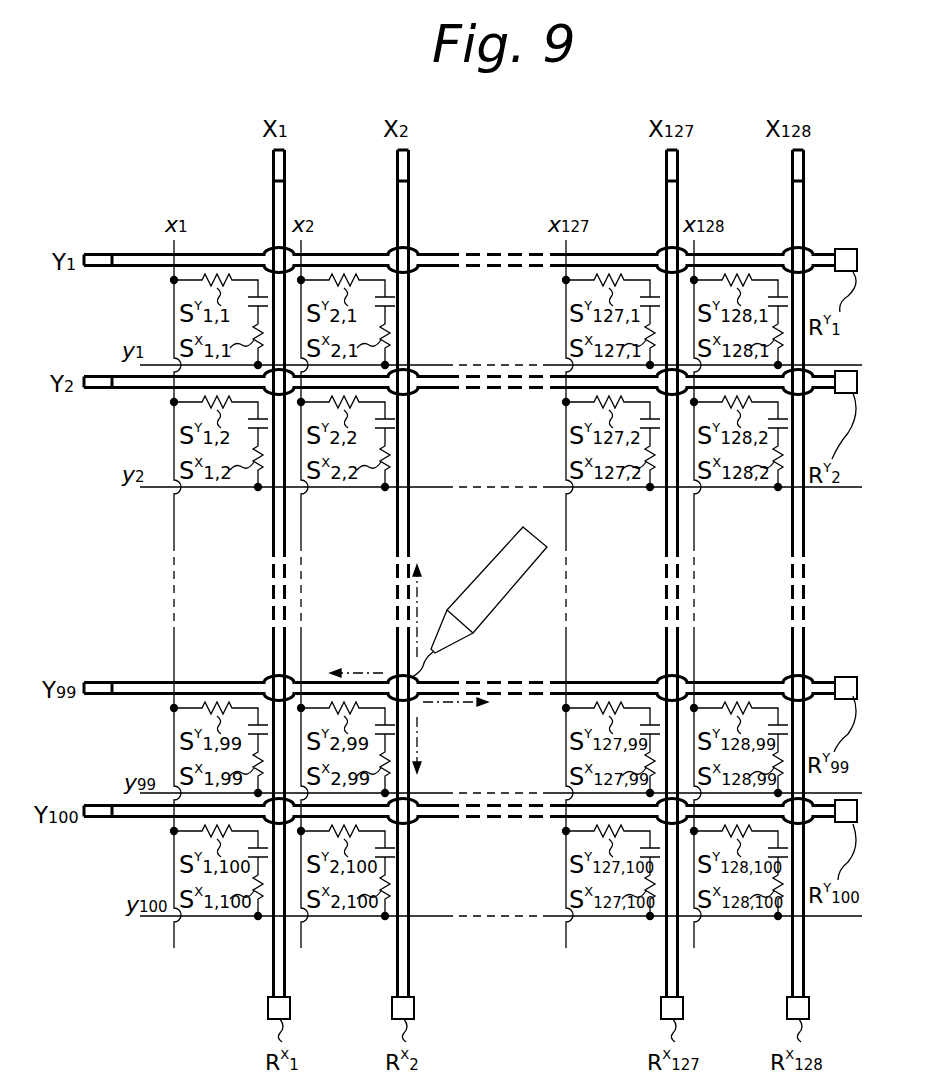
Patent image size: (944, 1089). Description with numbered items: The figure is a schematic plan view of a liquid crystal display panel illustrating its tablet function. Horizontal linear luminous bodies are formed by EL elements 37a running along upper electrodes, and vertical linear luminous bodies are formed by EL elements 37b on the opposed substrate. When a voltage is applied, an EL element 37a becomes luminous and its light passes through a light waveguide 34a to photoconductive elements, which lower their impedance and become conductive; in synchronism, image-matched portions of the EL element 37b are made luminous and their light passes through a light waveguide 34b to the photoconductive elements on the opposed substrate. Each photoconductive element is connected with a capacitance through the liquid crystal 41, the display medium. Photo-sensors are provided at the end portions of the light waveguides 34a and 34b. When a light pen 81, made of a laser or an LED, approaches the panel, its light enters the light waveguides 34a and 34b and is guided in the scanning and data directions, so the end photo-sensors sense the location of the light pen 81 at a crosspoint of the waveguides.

The EL element 37a is at (107, 255).
The EL element 37b is at (285, 164).
The light waveguide 34a is at (842, 240).
The light waveguide 34b is at (284, 976).
The liquid crystal 41 is at (787, 296).
The light pen 81 is at (500, 603).